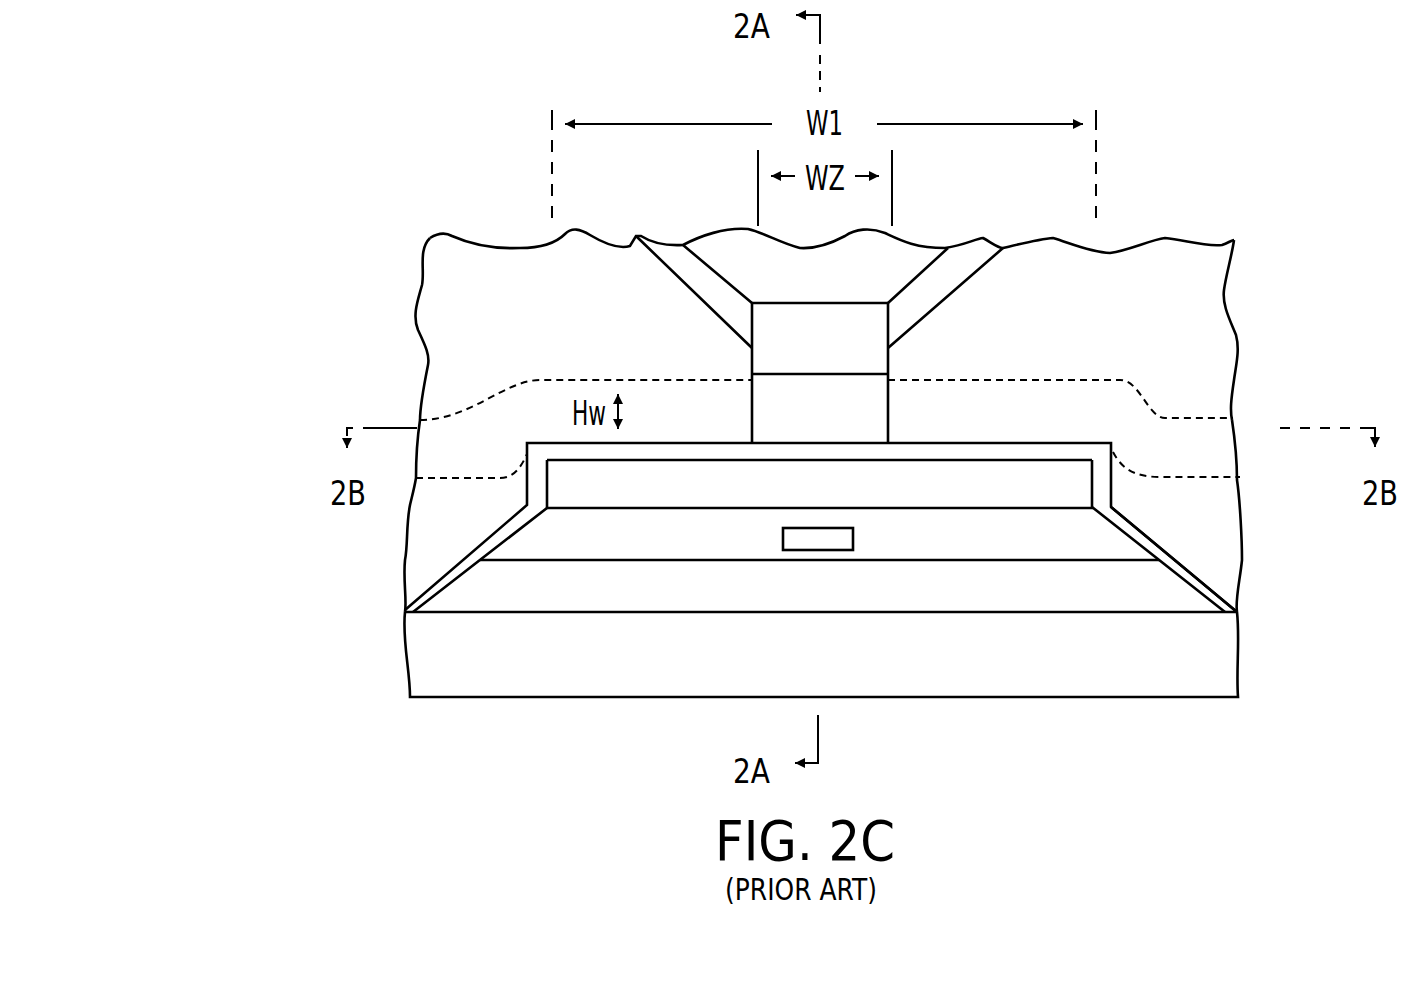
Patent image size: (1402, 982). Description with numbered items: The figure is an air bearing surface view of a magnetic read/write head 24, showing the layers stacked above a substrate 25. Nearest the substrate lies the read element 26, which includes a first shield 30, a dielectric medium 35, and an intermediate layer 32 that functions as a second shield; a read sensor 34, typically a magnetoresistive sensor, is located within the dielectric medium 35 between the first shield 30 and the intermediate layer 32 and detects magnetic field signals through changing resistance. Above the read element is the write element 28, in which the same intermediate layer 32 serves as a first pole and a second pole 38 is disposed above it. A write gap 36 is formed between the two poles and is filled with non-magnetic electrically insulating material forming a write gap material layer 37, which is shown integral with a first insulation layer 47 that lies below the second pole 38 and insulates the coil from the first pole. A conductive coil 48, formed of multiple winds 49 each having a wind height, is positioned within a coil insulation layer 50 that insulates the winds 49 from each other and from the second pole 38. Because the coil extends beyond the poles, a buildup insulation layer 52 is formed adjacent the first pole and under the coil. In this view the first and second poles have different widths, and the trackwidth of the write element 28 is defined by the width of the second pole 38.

The magnetic read/write head 24 is at (1166, 133).
The substrate 25 is at (494, 679).
The read element 26 is at (300, 467).
The write element 28 is at (212, 225).
The first shield 30 is at (524, 609).
The intermediate layer 32 is at (609, 504).
The read sensor 34 is at (783, 537).
The dielectric medium 35 is at (576, 554).
The write gap 36 is at (758, 448).
The write gap material layer 37 is at (848, 452).
The second pole 38 is at (856, 425).
The first insulation layer 47 is at (1205, 588).
The conductive coil 48 is at (1046, 344).
The winds 49 is at (1073, 432).
The coil insulation layer 50 is at (511, 324).
The buildup insulation layer 52 is at (468, 534).